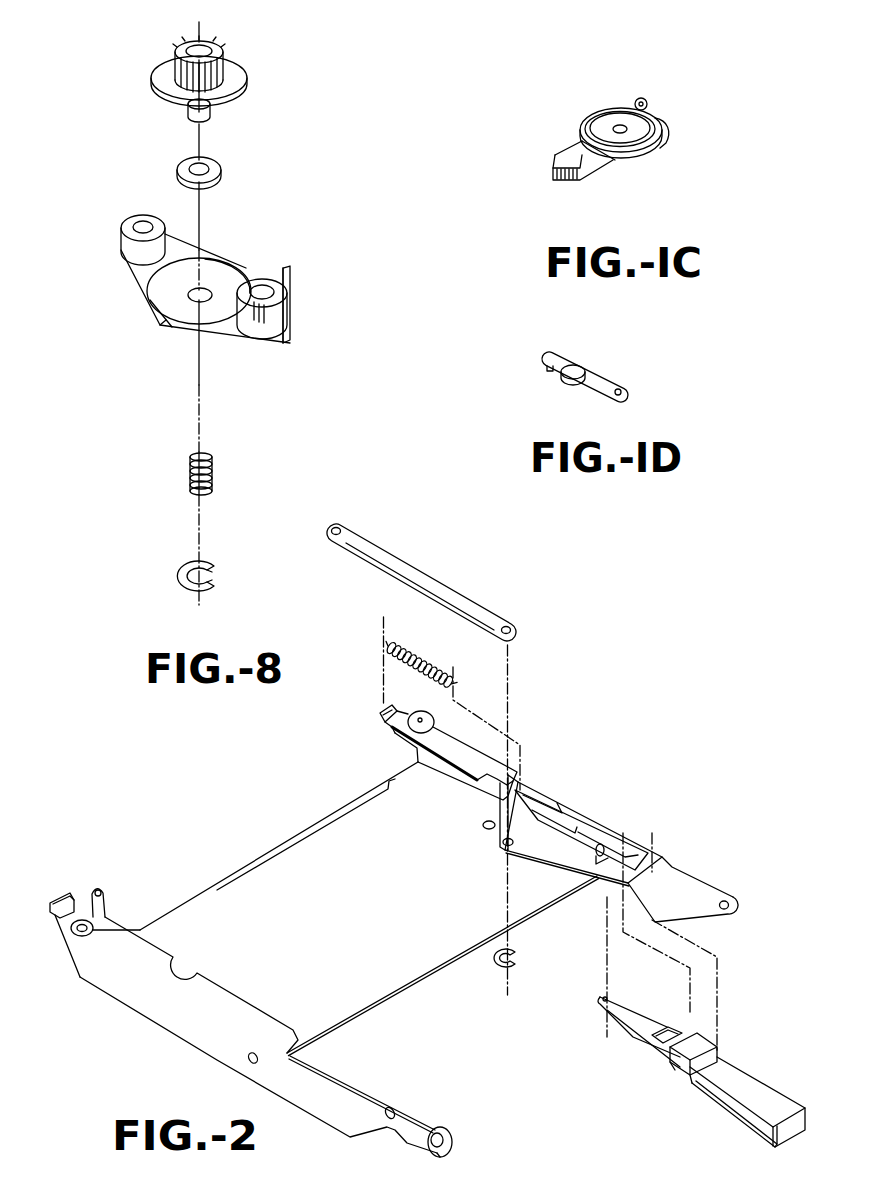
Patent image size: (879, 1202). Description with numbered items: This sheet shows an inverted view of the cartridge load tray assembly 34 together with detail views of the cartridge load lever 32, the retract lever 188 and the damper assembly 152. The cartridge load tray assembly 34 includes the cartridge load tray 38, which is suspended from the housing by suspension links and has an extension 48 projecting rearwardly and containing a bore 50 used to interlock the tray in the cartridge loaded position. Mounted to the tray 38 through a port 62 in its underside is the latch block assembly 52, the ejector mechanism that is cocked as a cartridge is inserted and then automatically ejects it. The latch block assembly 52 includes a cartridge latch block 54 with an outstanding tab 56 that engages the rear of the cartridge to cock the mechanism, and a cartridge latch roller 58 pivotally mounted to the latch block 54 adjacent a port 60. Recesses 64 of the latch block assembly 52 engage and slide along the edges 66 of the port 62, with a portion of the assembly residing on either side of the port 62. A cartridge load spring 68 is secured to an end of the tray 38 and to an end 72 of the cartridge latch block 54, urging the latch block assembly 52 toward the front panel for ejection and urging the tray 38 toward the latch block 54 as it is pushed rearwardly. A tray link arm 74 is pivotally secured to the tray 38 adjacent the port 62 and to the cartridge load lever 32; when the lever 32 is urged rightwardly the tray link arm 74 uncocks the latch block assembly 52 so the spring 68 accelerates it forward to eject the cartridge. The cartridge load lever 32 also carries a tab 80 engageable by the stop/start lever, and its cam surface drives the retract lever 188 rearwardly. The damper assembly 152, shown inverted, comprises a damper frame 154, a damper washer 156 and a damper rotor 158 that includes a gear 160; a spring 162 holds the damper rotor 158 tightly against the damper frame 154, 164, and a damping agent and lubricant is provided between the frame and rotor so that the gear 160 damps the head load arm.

In FIG. 1C, the cartridge load lever 32 is at (560, 181).
In FIG. 2, the cartridge load tray assembly 34 is at (324, 950).
In FIG. 2, the cartridge load tray 38 is at (388, 1003).
In FIG. 2, the extension 48 is at (418, 1112).
In FIG. 2, the bore 50 is at (447, 1130).
In FIG. 2, the latch block assembly 52 is at (708, 1118).
In FIG. 2, the cartridge latch block 54 is at (783, 1092).
In FIG. 2, the outstanding tab 56 is at (778, 1148).
In FIG. 2, the cartridge latch roller 58 is at (692, 1043).
In FIG. 2, the port 60 is at (678, 1032).
In FIG. 2, the port 62 is at (619, 833).
In FIG. 2, the recesses 64 is at (690, 1070).
In FIG. 2, the edges 66 is at (562, 823).
In FIG. 2, the cartridge load spring 68 is at (435, 655).
In FIG. 2, the end 72 is at (600, 999).
In FIG. 2, the tray link arm 74 is at (432, 578).
In FIG. 1C, the tab 80 is at (582, 132).
In FIG. 8, the damper assembly 152 is at (153, 455).
In FIG. 8, the damper frame 154 is at (229, 289).
In FIG. 8, the damper washer 156 is at (222, 167).
In FIG. 8, the damper rotor 158 is at (266, 87).
In FIG. 8, the gear 160 is at (224, 47).
In FIG. 8, the spring 162 is at (213, 463).
In FIG. 8, the damper frame 164 is at (198, 312).
In FIG. 1D, the retract lever 188 is at (598, 370).